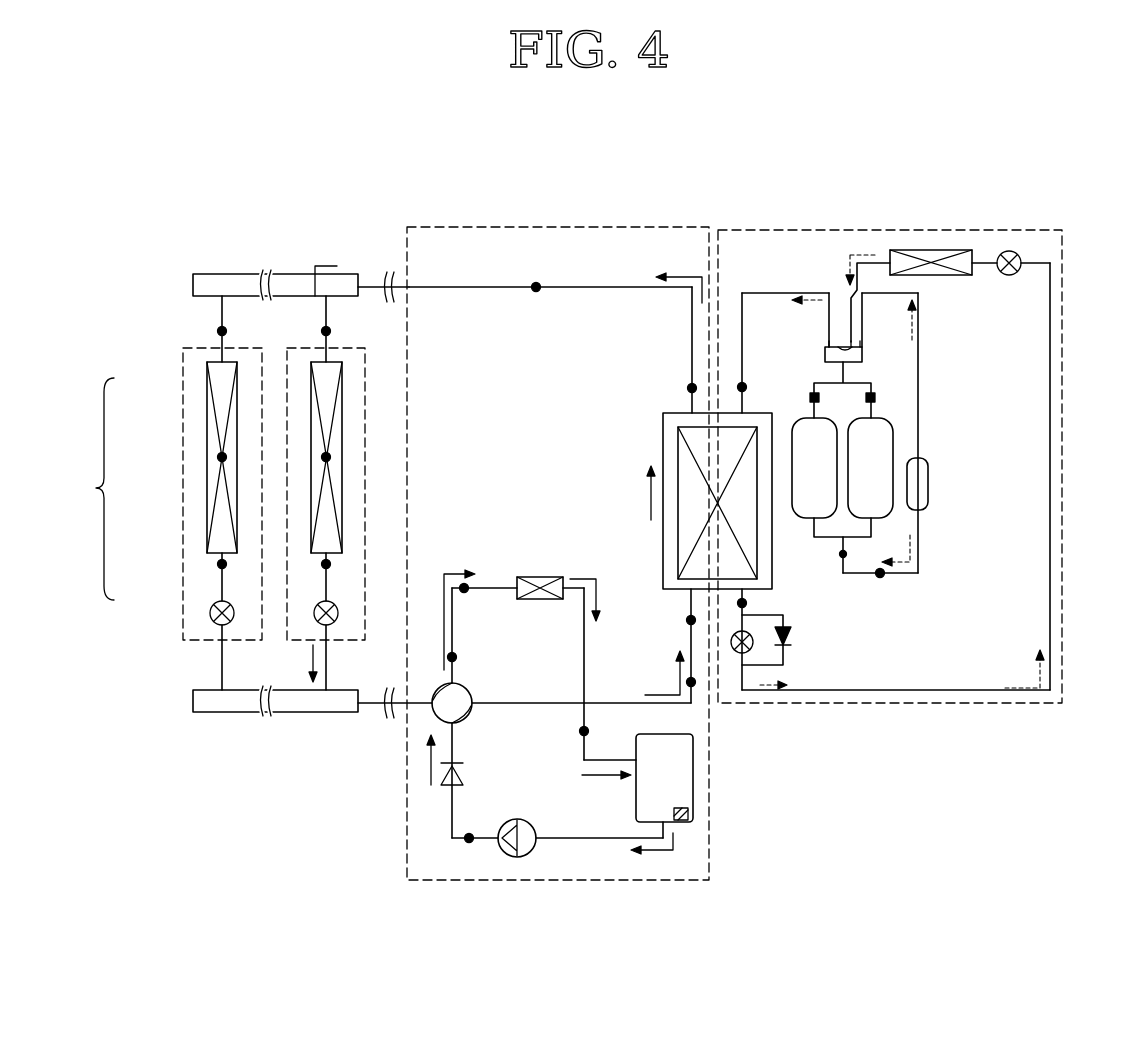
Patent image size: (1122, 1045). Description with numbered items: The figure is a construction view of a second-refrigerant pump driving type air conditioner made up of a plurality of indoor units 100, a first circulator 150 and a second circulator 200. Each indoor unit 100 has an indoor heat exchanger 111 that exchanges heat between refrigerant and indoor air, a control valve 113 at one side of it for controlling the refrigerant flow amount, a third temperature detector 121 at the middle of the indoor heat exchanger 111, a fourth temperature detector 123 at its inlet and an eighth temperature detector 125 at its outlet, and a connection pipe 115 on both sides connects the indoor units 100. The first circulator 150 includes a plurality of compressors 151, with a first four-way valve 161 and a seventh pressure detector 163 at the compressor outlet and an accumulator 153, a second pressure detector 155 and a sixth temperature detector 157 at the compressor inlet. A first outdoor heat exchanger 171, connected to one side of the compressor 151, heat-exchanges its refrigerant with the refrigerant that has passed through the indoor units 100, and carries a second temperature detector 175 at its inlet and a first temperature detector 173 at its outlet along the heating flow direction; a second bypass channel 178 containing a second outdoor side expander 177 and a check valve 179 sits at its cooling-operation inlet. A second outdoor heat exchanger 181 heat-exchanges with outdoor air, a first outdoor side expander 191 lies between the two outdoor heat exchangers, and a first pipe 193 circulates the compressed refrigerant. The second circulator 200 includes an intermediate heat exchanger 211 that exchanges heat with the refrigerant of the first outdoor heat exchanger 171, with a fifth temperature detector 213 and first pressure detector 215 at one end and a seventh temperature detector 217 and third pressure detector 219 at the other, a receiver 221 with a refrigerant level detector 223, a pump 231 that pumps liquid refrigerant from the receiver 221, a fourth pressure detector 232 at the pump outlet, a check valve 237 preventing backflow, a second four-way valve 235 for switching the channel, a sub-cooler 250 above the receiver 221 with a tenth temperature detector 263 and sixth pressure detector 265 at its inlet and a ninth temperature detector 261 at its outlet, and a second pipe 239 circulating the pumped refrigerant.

The indoor unit 100 is at (62, 499).
The indoor heat exchanger 111 is at (326, 413).
The control valve 113 is at (318, 605).
The connection pipe 115 is at (192, 283).
The third temperature detector 121 is at (324, 456).
The fourth temperature detector 123 is at (324, 330).
The eighth temperature detector 125 is at (324, 563).
The first circulator 150 is at (905, 230).
The compressor 151 is at (823, 437).
The accumulator 153 is at (929, 487).
The second pressure detector 155 is at (846, 558).
The sixth temperature detector 157 is at (883, 576).
The first four-way valve 161 is at (863, 353).
The seventh pressure detector 163 is at (815, 396).
The first outdoor heat exchanger 171 is at (745, 522).
The first temperature detector 173 is at (740, 607).
The second temperature detector 175 is at (743, 385).
The second outdoor side expander 177 is at (746, 654).
The second bypass channel 178 is at (790, 647).
The check valve 179 is at (784, 667).
The second outdoor heat exchanger 181 is at (945, 250).
The first outdoor side expander 191 is at (1009, 251).
The first pipe 193 is at (920, 540).
The second circulator 200 is at (512, 227).
The intermediate heat exchanger 211 is at (664, 416).
The fifth temperature detector 213 is at (691, 623).
The first pressure detector 215 is at (691, 685).
The seventh temperature detector 217 is at (712, 392).
The third pressure detector 219 is at (537, 284).
The receiver 221 is at (636, 810).
The refrigerant level detector 223 is at (686, 822).
The pump 231 is at (512, 857).
The fourth pressure detector 232 is at (469, 842).
The second four-way valve 235 is at (434, 713).
The check valve 237 is at (447, 787).
The second pipe 239 is at (430, 285).
The sub-cooler 250 is at (535, 600).
The ninth temperature detector 261 is at (584, 736).
The tenth temperature detector 263 is at (458, 589).
The sixth pressure detector 265 is at (448, 657).